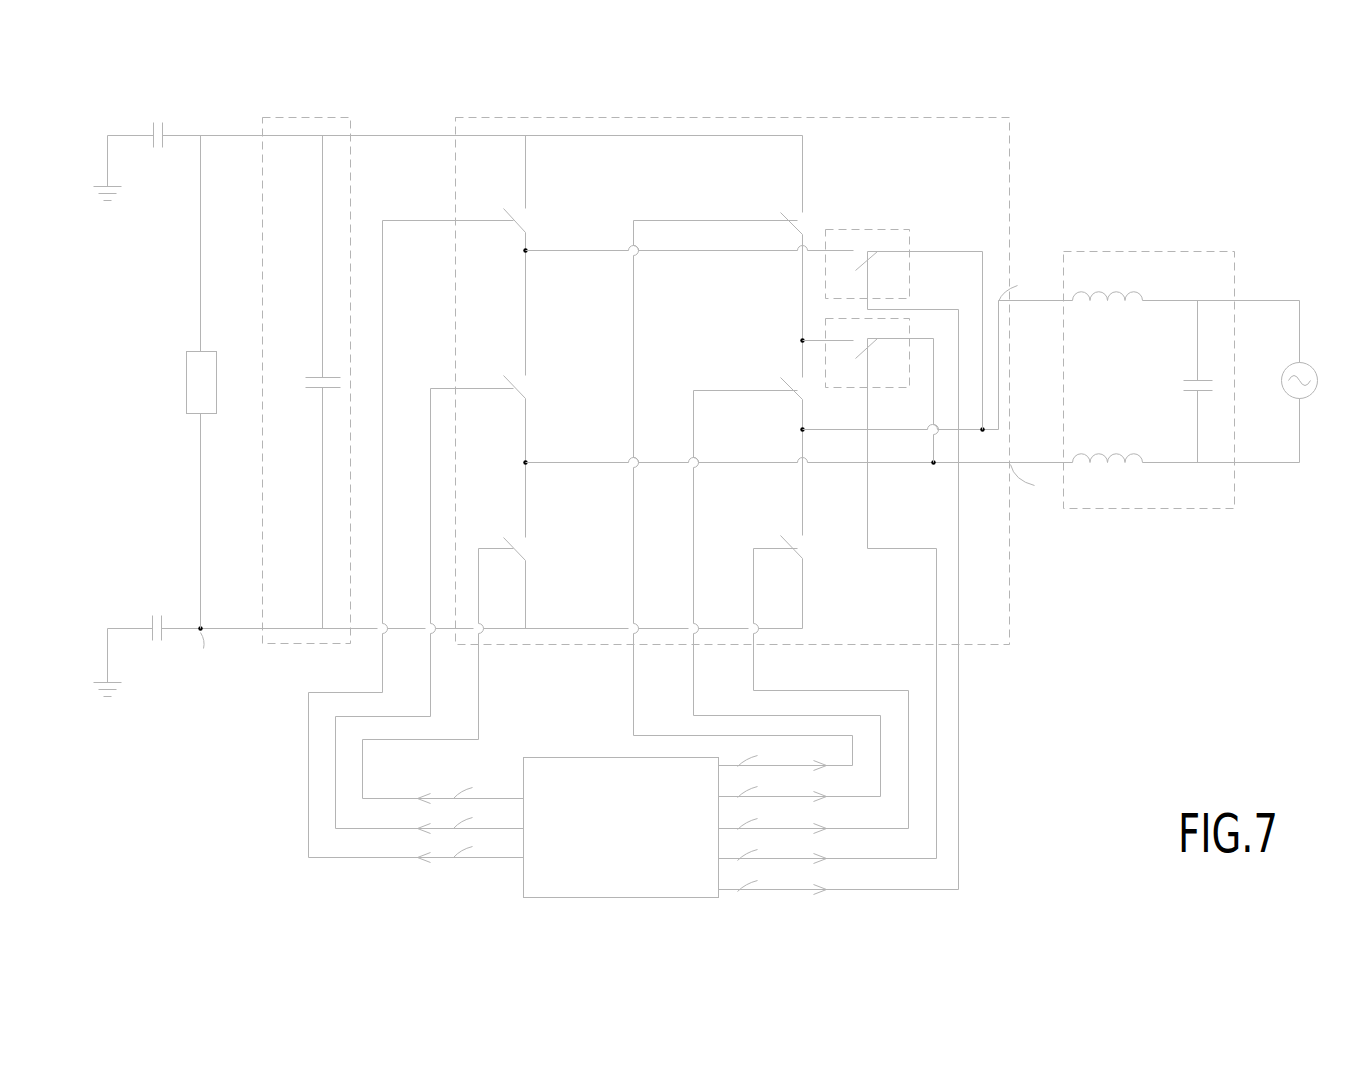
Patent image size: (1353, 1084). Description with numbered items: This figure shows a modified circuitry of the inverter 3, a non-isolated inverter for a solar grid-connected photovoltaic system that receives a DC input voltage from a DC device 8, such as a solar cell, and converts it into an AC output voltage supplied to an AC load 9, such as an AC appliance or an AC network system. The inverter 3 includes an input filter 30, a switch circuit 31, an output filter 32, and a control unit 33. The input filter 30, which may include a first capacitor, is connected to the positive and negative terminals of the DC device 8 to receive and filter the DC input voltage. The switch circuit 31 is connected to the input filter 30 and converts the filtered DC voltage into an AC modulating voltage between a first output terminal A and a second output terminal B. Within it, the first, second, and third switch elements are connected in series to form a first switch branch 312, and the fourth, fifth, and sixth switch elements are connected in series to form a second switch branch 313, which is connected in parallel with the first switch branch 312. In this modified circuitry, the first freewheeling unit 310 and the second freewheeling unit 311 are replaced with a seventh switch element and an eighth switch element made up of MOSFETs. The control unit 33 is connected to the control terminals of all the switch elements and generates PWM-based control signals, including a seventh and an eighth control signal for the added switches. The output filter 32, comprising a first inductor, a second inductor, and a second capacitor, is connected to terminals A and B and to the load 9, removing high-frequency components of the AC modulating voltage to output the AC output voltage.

The inverter 3 is at (1247, 177).
The DC device 8 is at (187, 382).
The AC load 9 is at (1301, 363).
The input filter 30 is at (262, 120).
The switch circuit 31 is at (455, 120).
The first freewheeling unit 310 is at (827, 389).
The second freewheeling unit 311 is at (897, 229).
The first switch branch 312 is at (738, 191).
The second switch branch 313 is at (435, 194).
The output filter 32 is at (1155, 251).
The control unit 33 is at (602, 745).